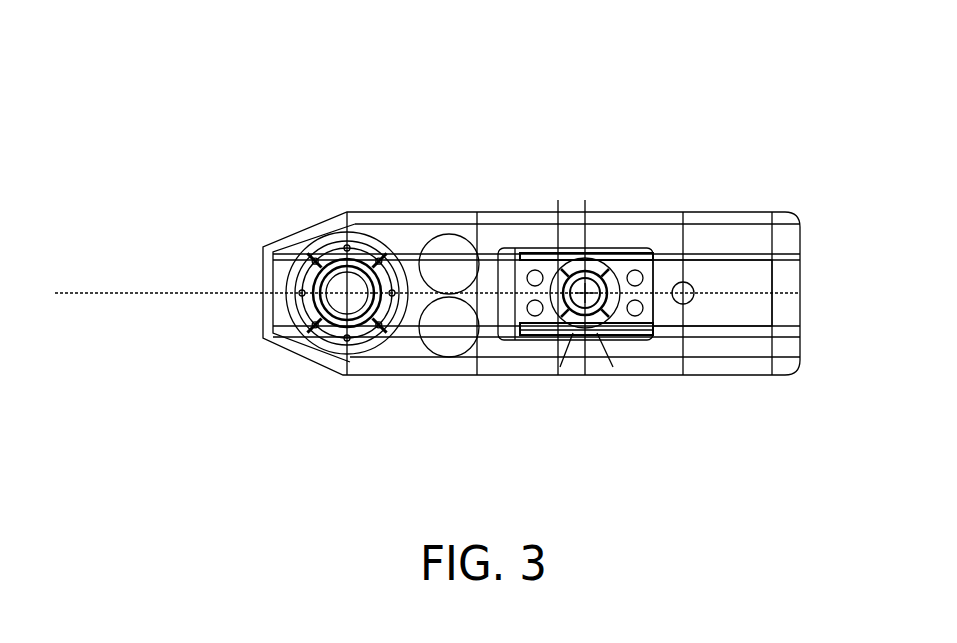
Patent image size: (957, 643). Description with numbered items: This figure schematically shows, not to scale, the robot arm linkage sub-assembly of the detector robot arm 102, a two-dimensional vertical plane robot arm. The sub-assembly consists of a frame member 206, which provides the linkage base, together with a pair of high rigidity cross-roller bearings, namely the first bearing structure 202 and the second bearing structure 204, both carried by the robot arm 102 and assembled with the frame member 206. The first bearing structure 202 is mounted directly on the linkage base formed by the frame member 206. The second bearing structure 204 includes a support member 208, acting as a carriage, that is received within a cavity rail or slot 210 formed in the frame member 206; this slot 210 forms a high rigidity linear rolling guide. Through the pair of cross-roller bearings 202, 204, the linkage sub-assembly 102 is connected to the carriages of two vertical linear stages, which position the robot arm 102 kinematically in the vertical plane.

The detector robot arm 102 is at (636, 72).
The first bearing structure 202 is at (371, 230).
The second bearing structure 204 is at (598, 250).
The frame member 206 is at (755, 209).
The support member 208 is at (517, 336).
The cavity rail or slot 210 is at (693, 336).